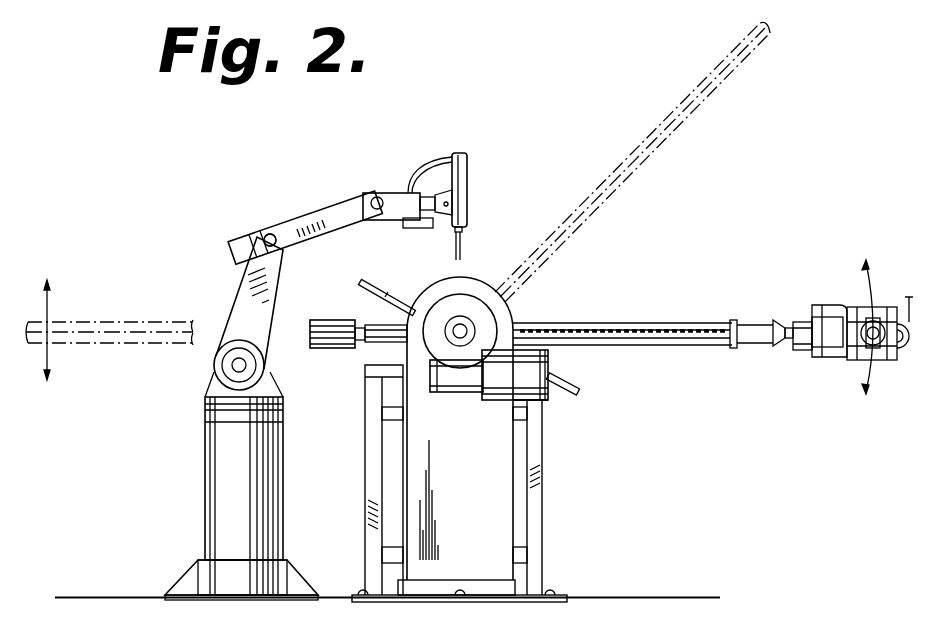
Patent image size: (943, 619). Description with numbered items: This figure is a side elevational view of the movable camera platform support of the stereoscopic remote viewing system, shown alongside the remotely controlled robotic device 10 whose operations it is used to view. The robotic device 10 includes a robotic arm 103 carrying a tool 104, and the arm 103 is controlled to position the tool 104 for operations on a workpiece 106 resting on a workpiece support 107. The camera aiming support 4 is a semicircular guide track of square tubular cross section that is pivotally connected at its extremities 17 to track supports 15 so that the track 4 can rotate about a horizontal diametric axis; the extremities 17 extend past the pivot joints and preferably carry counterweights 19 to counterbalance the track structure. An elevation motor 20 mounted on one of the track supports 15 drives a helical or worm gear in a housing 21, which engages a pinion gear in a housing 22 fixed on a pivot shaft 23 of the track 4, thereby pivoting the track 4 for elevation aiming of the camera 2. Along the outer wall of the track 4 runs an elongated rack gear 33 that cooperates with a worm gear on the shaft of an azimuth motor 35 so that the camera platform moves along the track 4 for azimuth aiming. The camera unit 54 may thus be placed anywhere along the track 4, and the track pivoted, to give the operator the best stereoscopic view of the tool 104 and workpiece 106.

The video camera 2 is at (785, 345).
The camera aiming support 4 is at (98, 322).
The robotic device 10 is at (240, 282).
The track support 15 is at (484, 504).
The extremity of the track 17 is at (380, 326).
The counterweight 19 is at (320, 350).
The elevation motor 20 is at (551, 398).
The worm gear housing 21 is at (457, 392).
The pinion gear housing 22 is at (486, 292).
The pivot shaft 23 is at (457, 328).
The rack gear 33 is at (688, 330).
The azimuth motor 35 is at (905, 348).
The camera unit 54 is at (812, 358).
The robotic arm 103 is at (299, 222).
The tool 104 is at (468, 181).
The workpiece 106 is at (562, 376).
The workpiece support 107 is at (360, 284).